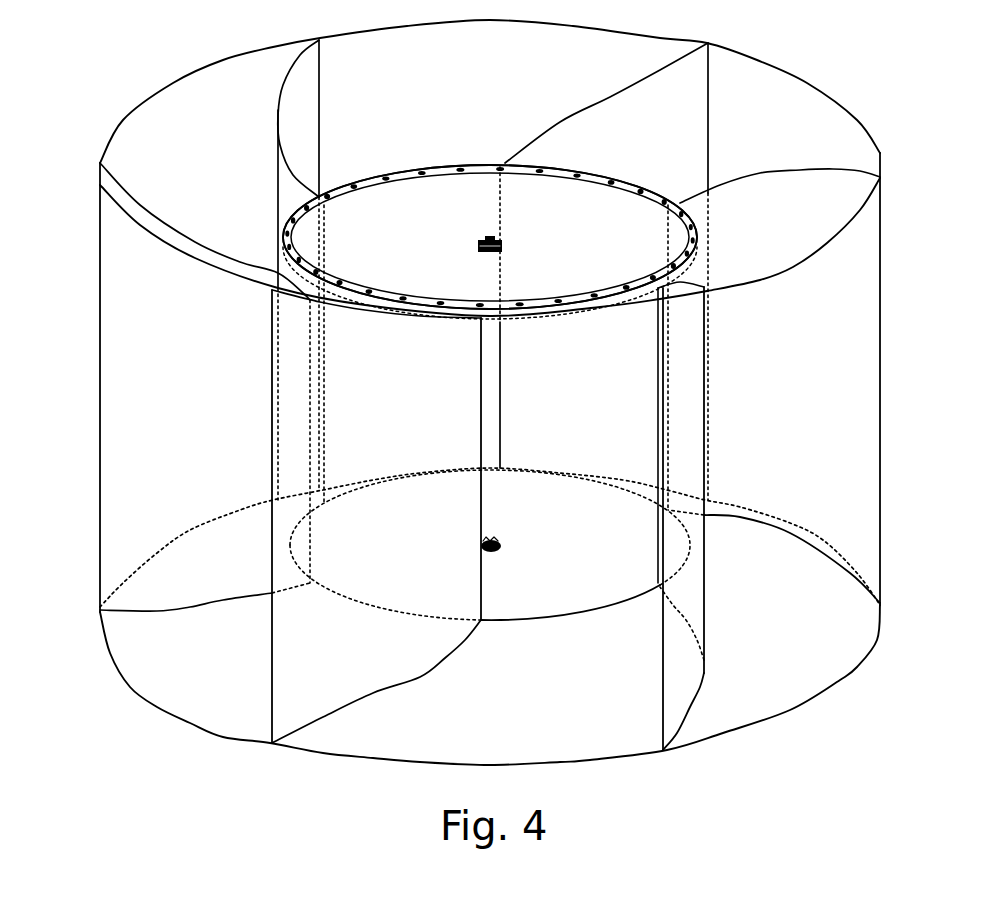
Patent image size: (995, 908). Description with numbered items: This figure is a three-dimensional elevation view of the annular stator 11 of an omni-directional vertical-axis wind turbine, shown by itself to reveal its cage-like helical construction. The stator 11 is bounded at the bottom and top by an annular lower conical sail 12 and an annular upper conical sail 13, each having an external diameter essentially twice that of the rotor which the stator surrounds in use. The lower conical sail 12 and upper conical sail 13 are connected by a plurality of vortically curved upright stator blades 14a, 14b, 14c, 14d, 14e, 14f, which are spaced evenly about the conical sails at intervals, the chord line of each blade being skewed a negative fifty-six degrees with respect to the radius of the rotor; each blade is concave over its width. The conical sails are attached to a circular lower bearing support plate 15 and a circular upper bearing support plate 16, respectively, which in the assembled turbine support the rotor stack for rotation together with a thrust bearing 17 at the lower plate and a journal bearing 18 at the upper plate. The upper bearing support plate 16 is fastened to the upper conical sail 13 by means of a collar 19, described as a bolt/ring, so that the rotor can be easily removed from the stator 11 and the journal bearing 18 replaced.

The annular stator 11 is at (85, 375).
The lower conical sail 12 is at (843, 682).
The upper conical sail 13 is at (810, 253).
The stator blade 14a is at (662, 678).
The stator blade 14b is at (882, 520).
The stator blade 14c is at (707, 157).
The stator blade 14d is at (320, 145).
The stator blade 14e is at (100, 545).
The stator blade 14f is at (270, 670).
The lower bearing support plate 15 is at (530, 620).
The upper bearing support plate 16 is at (610, 178).
The thrust bearing 17 is at (502, 540).
The journal bearing 18 is at (478, 244).
The collar 19 is at (452, 167).